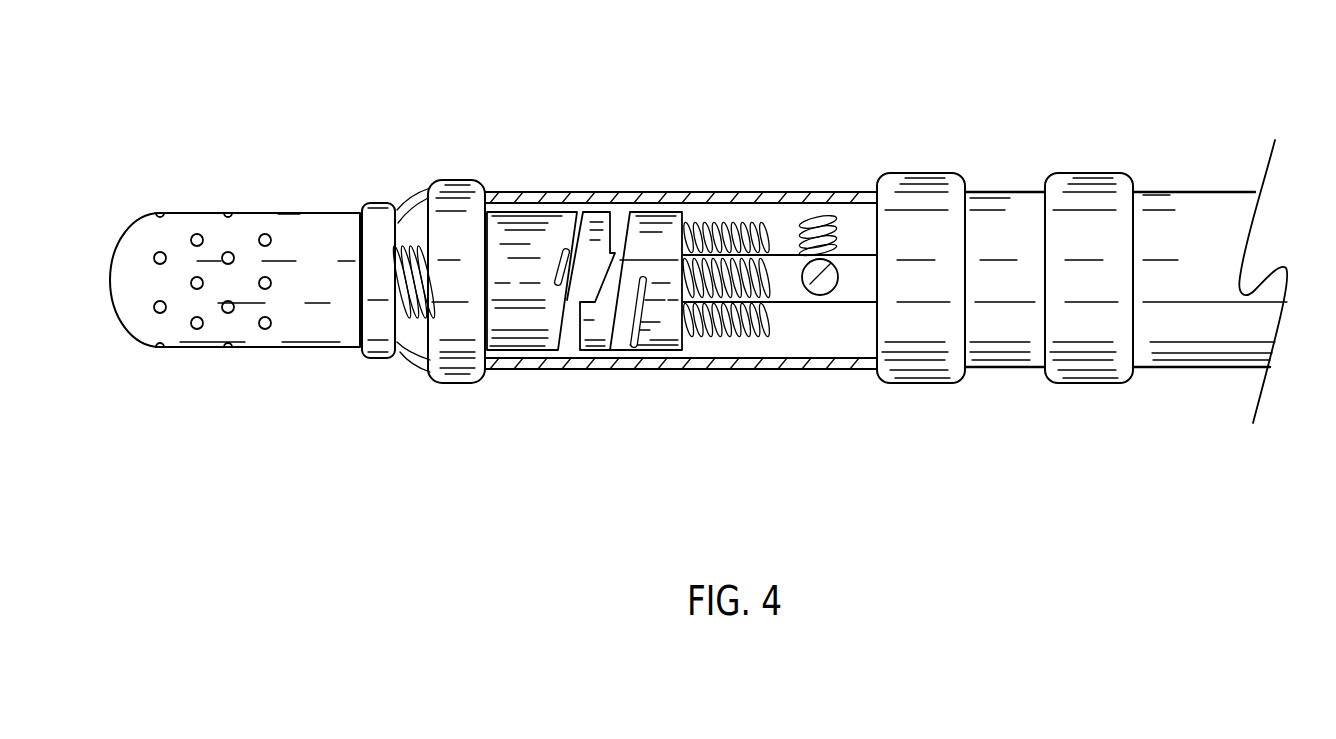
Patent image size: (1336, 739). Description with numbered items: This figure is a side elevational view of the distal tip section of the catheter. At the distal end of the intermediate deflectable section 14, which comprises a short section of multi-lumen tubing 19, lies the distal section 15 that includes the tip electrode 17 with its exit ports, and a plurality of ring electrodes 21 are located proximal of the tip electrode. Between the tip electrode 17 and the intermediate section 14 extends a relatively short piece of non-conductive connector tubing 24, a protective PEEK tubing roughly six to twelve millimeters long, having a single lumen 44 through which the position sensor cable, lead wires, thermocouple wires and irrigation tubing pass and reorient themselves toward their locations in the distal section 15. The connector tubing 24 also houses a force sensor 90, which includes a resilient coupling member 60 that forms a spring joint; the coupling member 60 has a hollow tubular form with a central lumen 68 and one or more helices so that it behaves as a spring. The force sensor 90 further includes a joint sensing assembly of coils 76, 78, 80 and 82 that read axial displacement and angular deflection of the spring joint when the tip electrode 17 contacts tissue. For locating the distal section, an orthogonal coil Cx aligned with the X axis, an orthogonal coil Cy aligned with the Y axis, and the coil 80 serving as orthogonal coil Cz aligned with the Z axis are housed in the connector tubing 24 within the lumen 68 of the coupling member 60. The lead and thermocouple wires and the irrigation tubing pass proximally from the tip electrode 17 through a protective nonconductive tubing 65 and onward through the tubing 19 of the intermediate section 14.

The intermediate deflectable section 14 is at (1156, 138).
The distal section 15 is at (412, 142).
The tip electrode 17 is at (300, 348).
The tubing 19 is at (1218, 367).
The ring electrodes 21 is at (927, 173).
The connector tubing 24 is at (503, 200).
The single lumen 44 is at (720, 347).
The resilient coupling member 60 is at (508, 352).
The protective nonconductive tubing 65 is at (787, 252).
The central lumen 68 is at (565, 327).
The coil 76 is at (712, 245).
The coil 78 is at (772, 277).
The coil 80 is at (748, 307).
The coil 82 is at (404, 342).
The force sensor 90 is at (600, 435).
The orthogonal coil Cx is at (825, 280).
The orthogonal coil Cy is at (823, 213).
The orthogonal coil Cz is at (727, 320).